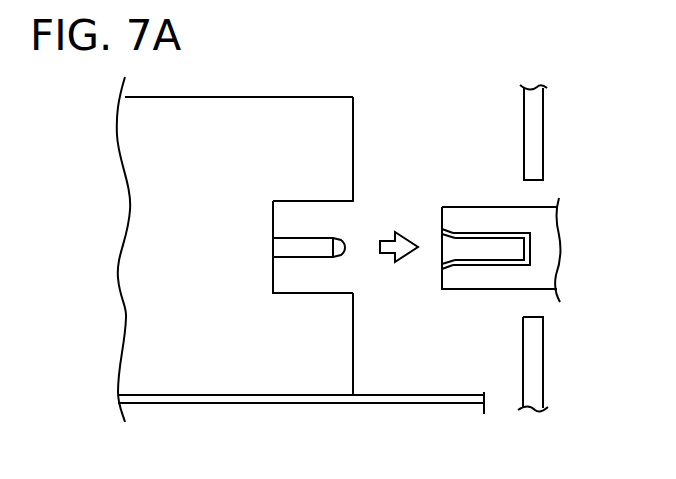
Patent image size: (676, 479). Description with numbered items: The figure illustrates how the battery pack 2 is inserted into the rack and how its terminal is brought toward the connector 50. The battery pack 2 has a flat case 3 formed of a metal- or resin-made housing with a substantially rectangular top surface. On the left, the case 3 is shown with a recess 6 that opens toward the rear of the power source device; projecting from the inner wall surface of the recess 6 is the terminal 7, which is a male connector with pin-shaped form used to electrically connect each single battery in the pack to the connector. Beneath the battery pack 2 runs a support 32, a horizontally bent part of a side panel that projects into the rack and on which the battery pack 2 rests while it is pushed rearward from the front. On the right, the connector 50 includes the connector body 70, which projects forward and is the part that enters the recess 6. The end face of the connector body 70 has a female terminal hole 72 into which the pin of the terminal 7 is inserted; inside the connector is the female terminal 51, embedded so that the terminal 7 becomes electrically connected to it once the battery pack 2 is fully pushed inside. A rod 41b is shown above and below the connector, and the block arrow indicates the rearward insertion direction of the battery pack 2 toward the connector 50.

The battery pack 2 is at (255, 225).
The case 3 is at (240, 97).
The recess 6 is at (328, 294).
The terminal 7 is at (303, 258).
The support 32 is at (420, 405).
The rod 41b is at (543, 120).
The connector 50 is at (522, 233).
The female terminal 51 is at (506, 232).
The connector body 70 is at (474, 290).
The female terminal hole 72 is at (441, 247).